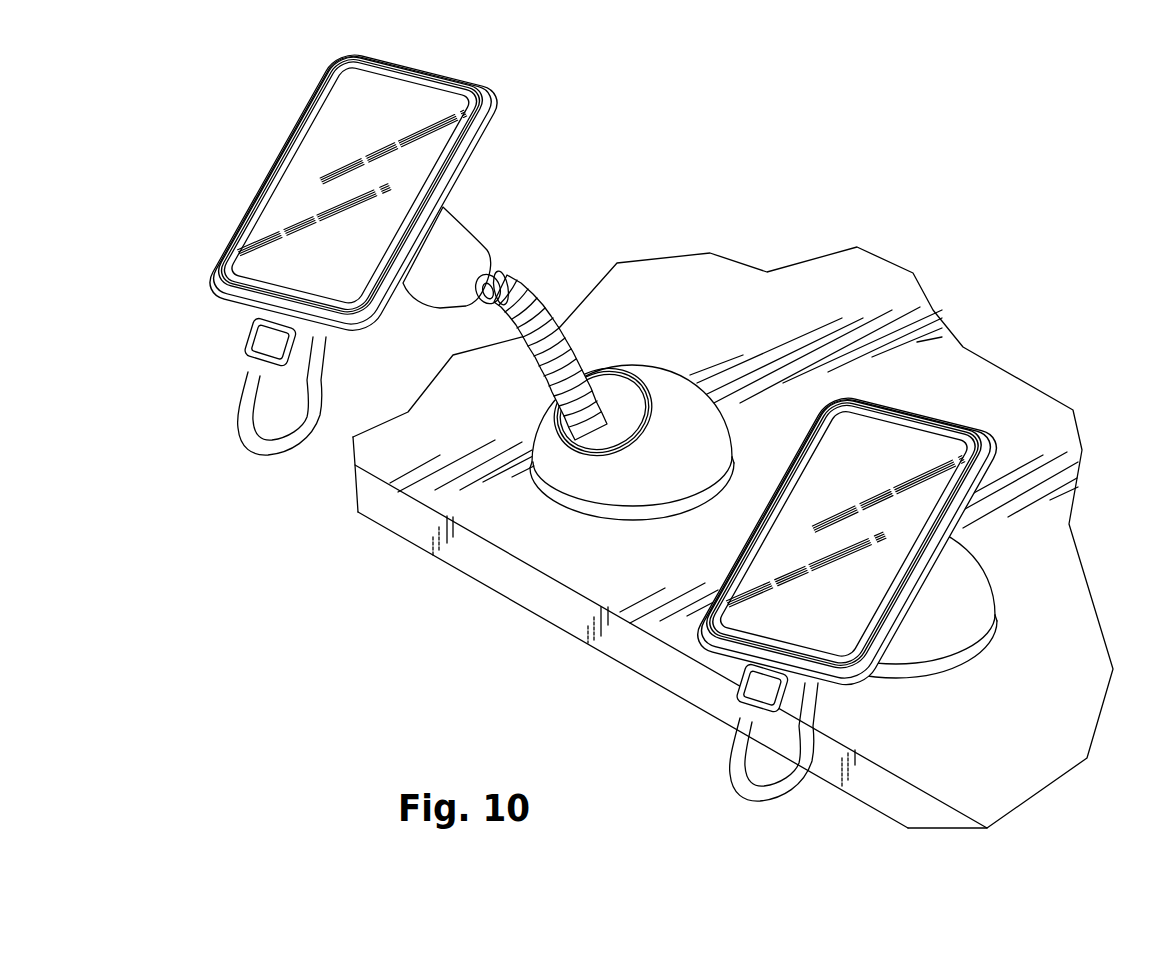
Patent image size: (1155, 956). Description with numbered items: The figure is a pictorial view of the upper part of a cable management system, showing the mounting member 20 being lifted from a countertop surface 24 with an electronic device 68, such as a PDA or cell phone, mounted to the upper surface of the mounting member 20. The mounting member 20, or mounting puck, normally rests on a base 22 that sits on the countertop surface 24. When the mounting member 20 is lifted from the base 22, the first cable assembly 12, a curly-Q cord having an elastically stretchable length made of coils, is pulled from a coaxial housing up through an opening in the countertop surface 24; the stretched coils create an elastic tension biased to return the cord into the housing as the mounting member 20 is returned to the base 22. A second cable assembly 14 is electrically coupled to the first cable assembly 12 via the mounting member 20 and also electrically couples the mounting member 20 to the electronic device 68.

The first cable assembly 12 is at (533, 297).
The second cable assembly 14 is at (258, 440).
The mounting member 20 is at (467, 225).
The base 22 is at (649, 358).
The countertop surface 24 is at (972, 742).
The electronic device 68 is at (270, 176).